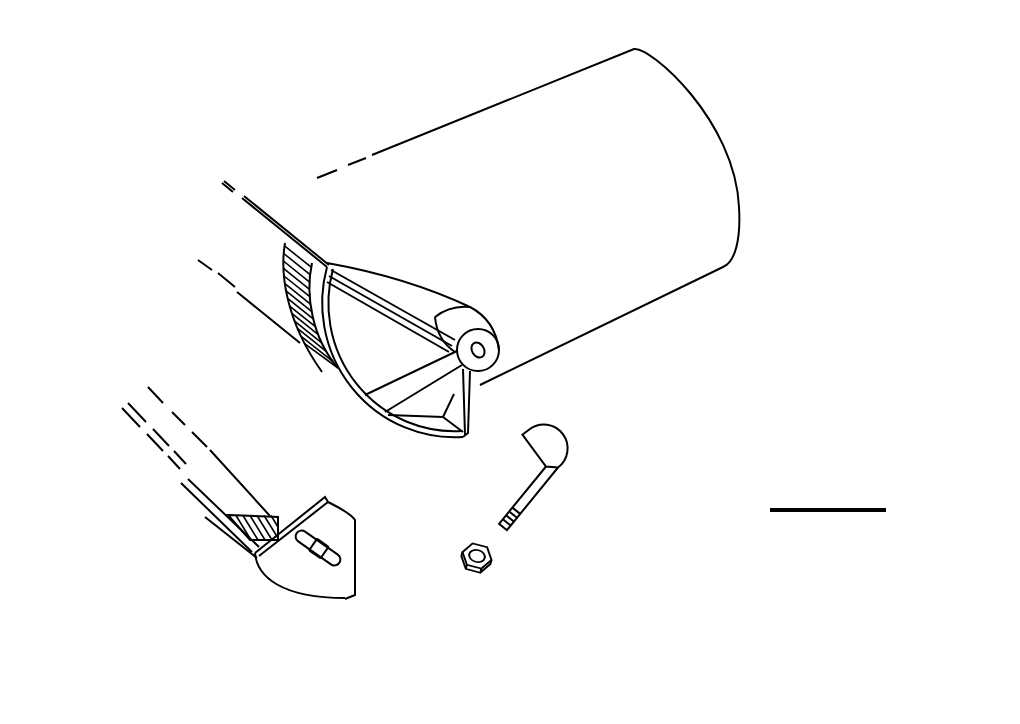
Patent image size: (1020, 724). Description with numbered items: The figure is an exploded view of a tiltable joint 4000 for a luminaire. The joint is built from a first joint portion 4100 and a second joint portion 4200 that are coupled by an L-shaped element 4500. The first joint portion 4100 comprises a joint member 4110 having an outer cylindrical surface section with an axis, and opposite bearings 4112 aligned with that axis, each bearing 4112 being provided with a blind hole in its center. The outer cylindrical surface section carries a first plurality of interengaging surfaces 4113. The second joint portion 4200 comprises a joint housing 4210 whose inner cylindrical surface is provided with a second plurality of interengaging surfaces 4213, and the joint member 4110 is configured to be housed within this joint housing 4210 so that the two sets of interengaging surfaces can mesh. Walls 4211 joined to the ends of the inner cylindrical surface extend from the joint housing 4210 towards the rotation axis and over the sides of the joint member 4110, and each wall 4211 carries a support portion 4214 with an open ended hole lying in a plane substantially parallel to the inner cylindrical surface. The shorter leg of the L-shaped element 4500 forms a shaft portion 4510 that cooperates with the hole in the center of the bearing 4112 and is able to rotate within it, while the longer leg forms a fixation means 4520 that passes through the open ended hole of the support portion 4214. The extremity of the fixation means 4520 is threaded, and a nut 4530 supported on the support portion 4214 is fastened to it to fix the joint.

The exercise device assembly 4000 is at (773, 90).
The first joint portion 4100 is at (647, 323).
The joint member 4110 is at (235, 262).
The bearings 4112 is at (490, 355).
The first plurality of interengaging surfaces 4113 is at (285, 280).
The second joint portion 4200 is at (228, 562).
The joint housing 4210 is at (203, 517).
The walls 4211 is at (287, 582).
The second plurality of interengaging surfaces 4213 is at (240, 514).
The support portion 4214 is at (340, 557).
The fastener assembly 4500 is at (537, 532).
The shaft portion 4510 is at (547, 445).
The fixation means 4520 is at (537, 488).
The nut 4530 is at (468, 543).